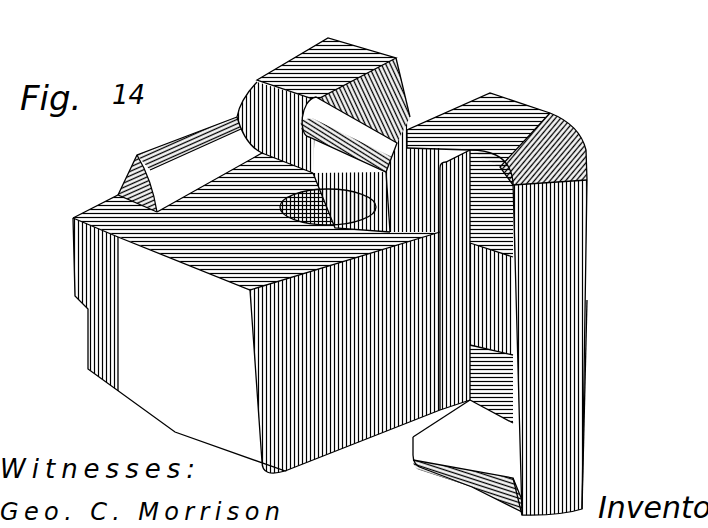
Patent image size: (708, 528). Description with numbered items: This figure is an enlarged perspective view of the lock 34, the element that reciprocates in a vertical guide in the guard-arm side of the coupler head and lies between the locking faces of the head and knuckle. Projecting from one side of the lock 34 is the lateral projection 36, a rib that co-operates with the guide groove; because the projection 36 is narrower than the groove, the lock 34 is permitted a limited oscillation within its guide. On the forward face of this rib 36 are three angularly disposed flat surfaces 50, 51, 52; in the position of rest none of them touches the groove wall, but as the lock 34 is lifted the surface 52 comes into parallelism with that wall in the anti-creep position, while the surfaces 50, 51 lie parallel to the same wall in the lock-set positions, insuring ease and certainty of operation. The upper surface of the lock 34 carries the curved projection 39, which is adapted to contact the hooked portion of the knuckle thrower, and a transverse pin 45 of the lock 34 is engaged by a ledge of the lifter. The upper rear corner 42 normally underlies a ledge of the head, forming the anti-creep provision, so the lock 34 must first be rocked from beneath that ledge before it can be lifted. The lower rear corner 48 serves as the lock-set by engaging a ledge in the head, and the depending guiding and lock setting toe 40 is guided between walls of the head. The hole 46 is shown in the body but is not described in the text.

The lock 34 is at (160, 372).
The lateral projection 36 is at (572, 289).
The curved projection 39 is at (178, 136).
The guiding and lock setting toe 40 is at (463, 463).
The upper rear corner 42 is at (337, 40).
The transverse pin 45 is at (318, 153).
The hole 46 is at (322, 213).
The lower rear corner 48 is at (589, 495).
The flat surface 50 is at (491, 203).
The flat surface 51 is at (491, 299).
The flat surface 52 is at (491, 394).